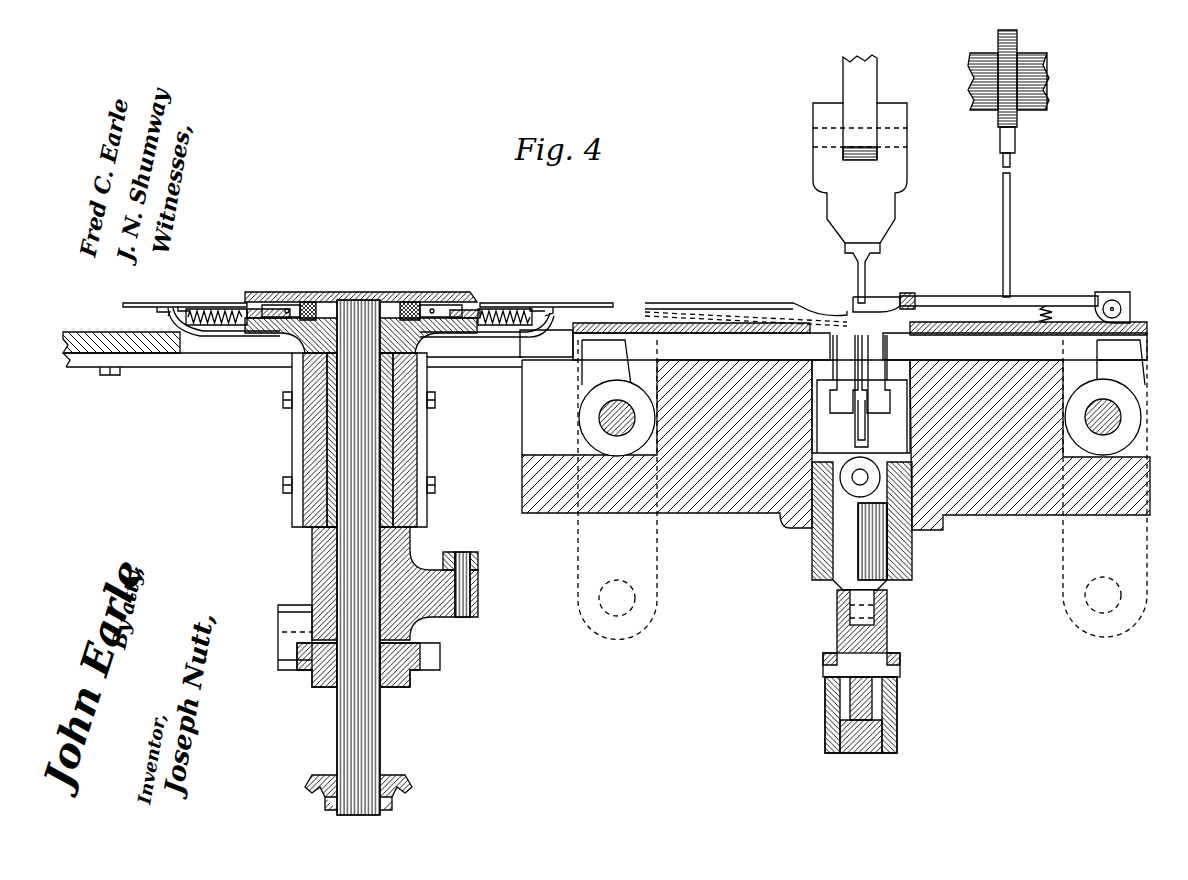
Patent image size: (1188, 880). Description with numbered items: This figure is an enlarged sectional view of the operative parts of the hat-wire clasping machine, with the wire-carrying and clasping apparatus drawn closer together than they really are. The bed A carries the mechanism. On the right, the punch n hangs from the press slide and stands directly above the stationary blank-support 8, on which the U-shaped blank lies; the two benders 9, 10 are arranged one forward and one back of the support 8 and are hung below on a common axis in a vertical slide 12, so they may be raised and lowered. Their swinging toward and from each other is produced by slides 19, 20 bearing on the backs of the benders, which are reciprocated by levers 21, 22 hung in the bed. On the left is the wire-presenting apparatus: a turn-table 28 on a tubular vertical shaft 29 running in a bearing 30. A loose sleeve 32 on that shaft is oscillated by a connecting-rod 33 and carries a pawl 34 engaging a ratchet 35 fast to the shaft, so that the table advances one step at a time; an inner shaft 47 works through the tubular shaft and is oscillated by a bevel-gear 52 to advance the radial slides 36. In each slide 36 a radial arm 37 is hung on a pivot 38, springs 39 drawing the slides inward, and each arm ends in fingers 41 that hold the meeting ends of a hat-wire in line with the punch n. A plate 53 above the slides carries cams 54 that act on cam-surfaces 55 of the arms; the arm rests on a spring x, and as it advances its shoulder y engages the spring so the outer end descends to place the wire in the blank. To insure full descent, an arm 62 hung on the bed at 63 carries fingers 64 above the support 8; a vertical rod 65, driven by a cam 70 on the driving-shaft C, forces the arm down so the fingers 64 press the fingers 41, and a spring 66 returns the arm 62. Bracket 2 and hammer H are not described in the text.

The radial arm 37 is at (139, 298).
The clip 2 is at (160, 306).
The shoulder of the arm y is at (184, 306).
The spring x is at (353, 318).
The radial slide 36 is at (468, 333).
The spring 39 is at (209, 310).
The cam 54 is at (490, 289).
The cam-surface 55 is at (270, 305).
The pivot 38 is at (306, 302).
The plate 53 is at (361, 288).
The turn-table 28 is at (361, 335).
The tubular vertical shaft 29 is at (303, 447).
The bearing 30 is at (398, 440).
The loose sleeve 32 is at (395, 583).
The connecting-rod 33 is at (471, 581).
The pawl 34 is at (278, 632).
The ratchet 35 is at (361, 667).
The bevel-gear 52 is at (354, 792).
The shaft 47 is at (358, 557).
The bed A is at (667, 444).
The slide 19 is at (701, 341).
The lever 21 is at (617, 490).
The slide 20 is at (1016, 426).
The lever 22 is at (1105, 488).
The bender 9 is at (844, 374).
The bender 10 is at (876, 374).
The blank-support 8 is at (855, 370).
The hammer H is at (862, 518).
The vertical slide 12 is at (861, 628).
The punch n is at (860, 179).
The fingers 41 is at (746, 310).
The fingers 64 is at (876, 300).
The arm 62 is at (999, 293).
The spring 66 is at (1047, 305).
The pivot 63 is at (1123, 307).
The vertical rod 65 is at (1016, 225).
The cam 70 is at (1016, 91).
The driving-shaft C is at (1047, 82).